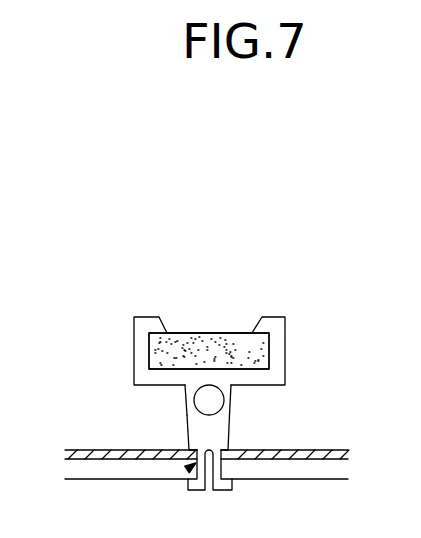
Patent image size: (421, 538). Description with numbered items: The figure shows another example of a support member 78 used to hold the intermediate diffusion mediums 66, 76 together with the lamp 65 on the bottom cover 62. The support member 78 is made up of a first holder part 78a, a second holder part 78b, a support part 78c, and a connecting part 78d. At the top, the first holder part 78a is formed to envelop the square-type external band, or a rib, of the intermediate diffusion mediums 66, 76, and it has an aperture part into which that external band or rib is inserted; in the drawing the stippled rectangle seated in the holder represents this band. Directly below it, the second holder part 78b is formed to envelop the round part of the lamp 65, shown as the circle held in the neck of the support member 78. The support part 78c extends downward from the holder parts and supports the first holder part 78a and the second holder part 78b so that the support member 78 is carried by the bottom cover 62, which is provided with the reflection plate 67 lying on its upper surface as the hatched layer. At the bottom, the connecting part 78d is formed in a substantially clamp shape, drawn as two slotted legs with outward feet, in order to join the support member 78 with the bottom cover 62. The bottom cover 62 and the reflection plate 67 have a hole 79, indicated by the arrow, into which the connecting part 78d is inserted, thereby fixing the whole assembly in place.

The intermediate diffusion medium 66 is at (210, 343).
The intermediate diffusion medium 76 is at (209, 351).
The lamp 65 is at (205, 402).
The support member 78 is at (268, 403).
The first holder part 78a is at (273, 357).
The second holder part 78b is at (233, 405).
The support part 78c is at (217, 427).
The connecting part 78d is at (237, 454).
The reflection plate 67 is at (348, 456).
The bottom cover 62 is at (346, 477).
The hole 79 is at (190, 467).